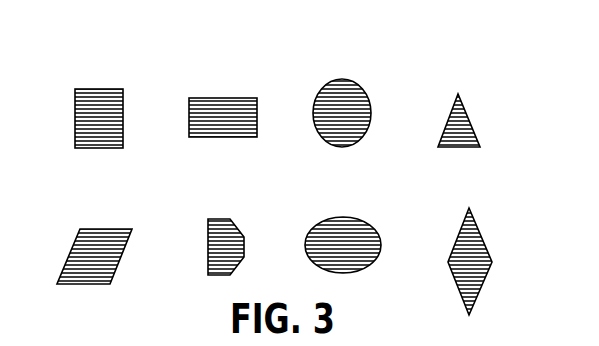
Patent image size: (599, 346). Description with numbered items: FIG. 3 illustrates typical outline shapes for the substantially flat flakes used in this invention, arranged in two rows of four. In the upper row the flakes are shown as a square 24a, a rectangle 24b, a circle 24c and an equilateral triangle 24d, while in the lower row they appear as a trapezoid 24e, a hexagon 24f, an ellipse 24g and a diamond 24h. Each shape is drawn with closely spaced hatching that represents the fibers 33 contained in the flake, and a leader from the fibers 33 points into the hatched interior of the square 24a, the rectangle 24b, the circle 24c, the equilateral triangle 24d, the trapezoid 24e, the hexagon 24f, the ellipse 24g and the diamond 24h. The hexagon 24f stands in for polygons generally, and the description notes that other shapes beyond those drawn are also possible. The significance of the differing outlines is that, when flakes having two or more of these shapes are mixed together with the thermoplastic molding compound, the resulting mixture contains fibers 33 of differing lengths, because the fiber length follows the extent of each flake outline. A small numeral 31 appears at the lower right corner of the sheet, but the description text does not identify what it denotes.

The rectangular indicium shape 24a is at (98, 89).
The wide rectangular indicium shape 24b is at (233, 98).
The oval indicium shape 24c is at (342, 79).
The triangular indicium shape 24d is at (458, 94).
The parallelogram indicium shape 24e is at (107, 229).
The hexagonal indicium shape 24f is at (228, 219).
The elliptical indicium shape 24g is at (358, 217).
The diamond indicium shape 24h is at (470, 208).
The colored fill of indicium 33 is at (88, 118).
The sheet 31 is at (535, 335).